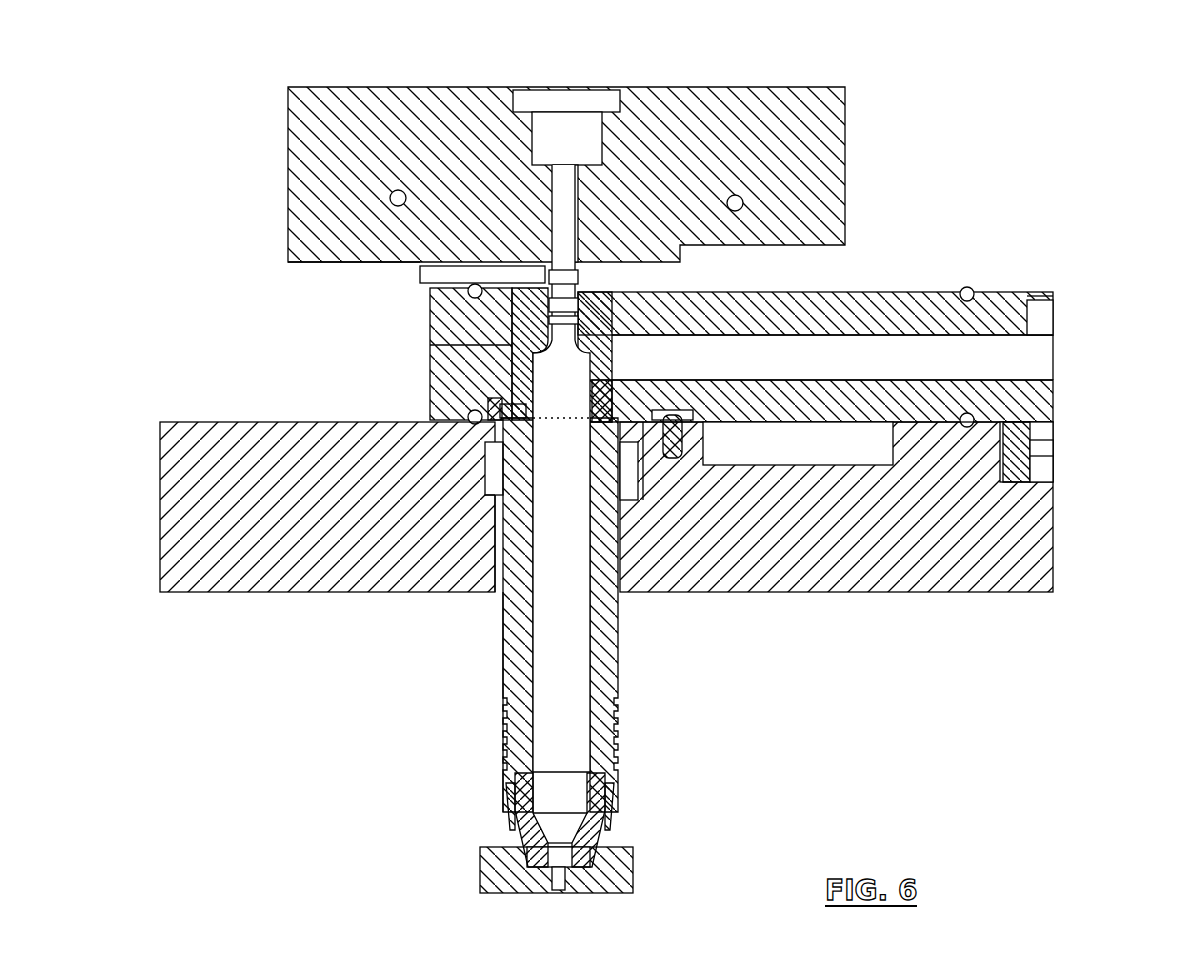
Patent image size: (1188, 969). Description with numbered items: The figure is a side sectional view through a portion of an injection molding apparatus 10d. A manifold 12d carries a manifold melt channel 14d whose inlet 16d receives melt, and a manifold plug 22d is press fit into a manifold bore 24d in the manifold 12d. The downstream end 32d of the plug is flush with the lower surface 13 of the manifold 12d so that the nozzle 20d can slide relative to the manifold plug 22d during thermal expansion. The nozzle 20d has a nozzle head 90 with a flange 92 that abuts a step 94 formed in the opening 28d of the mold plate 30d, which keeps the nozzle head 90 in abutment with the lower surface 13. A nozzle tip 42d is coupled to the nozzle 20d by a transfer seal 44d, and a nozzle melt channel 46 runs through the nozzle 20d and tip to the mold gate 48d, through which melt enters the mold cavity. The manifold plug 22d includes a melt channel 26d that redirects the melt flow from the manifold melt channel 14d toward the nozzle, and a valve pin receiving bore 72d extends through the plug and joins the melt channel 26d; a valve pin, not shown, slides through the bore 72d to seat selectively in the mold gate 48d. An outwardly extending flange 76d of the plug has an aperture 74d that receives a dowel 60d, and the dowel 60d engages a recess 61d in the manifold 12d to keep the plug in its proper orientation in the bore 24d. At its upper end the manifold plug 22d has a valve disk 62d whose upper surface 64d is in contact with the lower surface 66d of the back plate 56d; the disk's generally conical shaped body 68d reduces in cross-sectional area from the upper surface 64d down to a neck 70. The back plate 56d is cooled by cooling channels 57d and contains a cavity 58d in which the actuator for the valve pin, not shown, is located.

The injection molding apparatus 10d is at (893, 68).
The back plate 56d is at (858, 163).
The cooling channels 57d is at (743, 205).
The cavity 58d is at (585, 123).
The lower surface of back plate 66d is at (303, 260).
The valve disk 62d is at (533, 273).
The manifold plug 22d is at (430, 295).
The manifold bore 24d is at (430, 328).
The downstream end of manifold plug 32d is at (430, 353).
The aperture 74d is at (430, 367).
The dowel 60d is at (430, 392).
The recess 61d is at (492, 428).
The manifold 12d is at (1000, 312).
The inlet 16d is at (1045, 313).
The manifold melt channel 14d is at (1030, 357).
The valve pin receiving bore 72d is at (600, 295).
The outwardly extending flange 76d is at (620, 392).
The neck 70 is at (588, 304).
The conical shaped body 68d is at (566, 273).
The upper surface of valve disk 64d is at (588, 292).
The melt channel of manifold plug 26d is at (582, 403).
The nozzle melt channel 46 is at (571, 653).
The lower surface of manifold 13 is at (940, 425).
The mold plate 30d is at (1050, 523).
The step 94 is at (483, 578).
The opening 28d is at (490, 592).
The flange 92 is at (645, 495).
The nozzle head 90 is at (674, 462).
The nozzle 20d is at (604, 676).
The nozzle tip 42d is at (612, 795).
The transfer seal 44d is at (615, 828).
The mold gate 48d is at (572, 887).